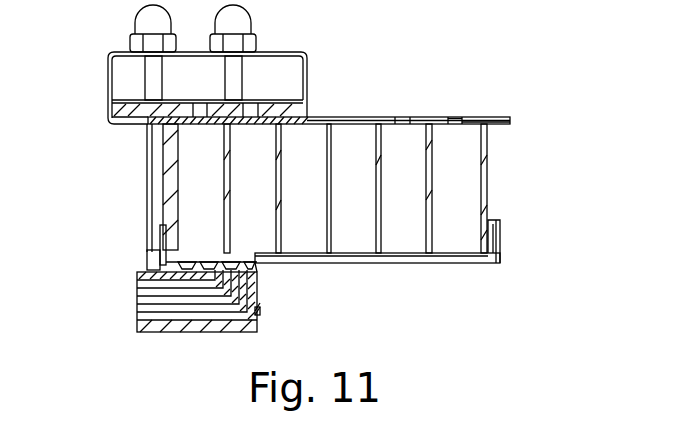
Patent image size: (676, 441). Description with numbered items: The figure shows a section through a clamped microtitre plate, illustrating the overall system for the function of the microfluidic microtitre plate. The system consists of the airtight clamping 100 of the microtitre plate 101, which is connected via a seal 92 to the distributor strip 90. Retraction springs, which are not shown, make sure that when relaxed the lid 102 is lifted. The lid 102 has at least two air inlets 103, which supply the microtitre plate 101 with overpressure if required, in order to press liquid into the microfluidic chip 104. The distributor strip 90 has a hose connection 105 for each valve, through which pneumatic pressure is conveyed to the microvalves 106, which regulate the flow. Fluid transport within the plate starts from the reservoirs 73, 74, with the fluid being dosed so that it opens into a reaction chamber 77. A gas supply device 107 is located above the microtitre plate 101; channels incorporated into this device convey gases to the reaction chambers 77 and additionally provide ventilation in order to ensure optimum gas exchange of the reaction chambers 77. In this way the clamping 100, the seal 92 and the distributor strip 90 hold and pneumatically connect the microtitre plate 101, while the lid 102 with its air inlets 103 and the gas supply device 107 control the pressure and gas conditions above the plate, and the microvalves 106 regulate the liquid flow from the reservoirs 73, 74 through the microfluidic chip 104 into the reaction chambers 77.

The airtight clamping 100 is at (310, 110).
The microtitre plate 101 is at (515, 188).
The lid 102 is at (500, 113).
The air inlets 103 is at (450, 117).
The microfluidic chip 104 is at (447, 258).
The hose connection 105 is at (137, 295).
The microvalves 106 is at (200, 262).
The gas supply device 107 is at (510, 122).
The distributor strip 90 is at (262, 322).
The seal 92 is at (258, 266).
The reservoir 73 is at (215, 197).
The reservoir 74 is at (266, 197).
The reaction chamber 77 is at (474, 197).